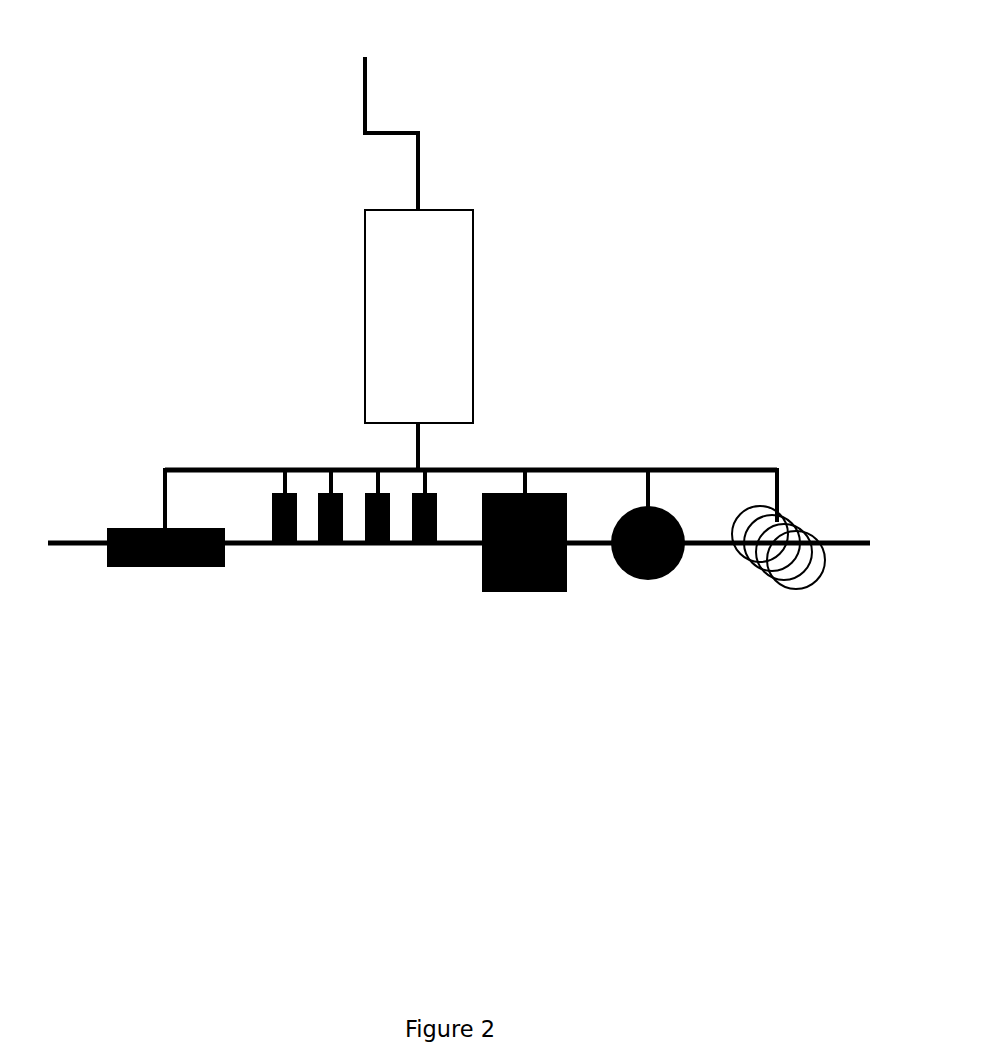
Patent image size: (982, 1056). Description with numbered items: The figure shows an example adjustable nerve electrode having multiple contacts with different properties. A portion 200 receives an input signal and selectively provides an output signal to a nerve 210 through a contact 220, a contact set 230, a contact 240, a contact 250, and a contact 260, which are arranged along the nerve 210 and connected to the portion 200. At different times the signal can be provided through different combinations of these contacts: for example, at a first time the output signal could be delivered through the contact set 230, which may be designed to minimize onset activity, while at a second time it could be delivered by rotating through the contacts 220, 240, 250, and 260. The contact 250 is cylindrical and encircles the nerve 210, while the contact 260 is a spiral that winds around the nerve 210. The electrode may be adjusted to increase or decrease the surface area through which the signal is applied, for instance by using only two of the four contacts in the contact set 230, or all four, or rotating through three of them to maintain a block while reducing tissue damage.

The portion 200 is at (485, 240).
The nerve 210 is at (849, 534).
The contact 220 is at (162, 571).
The contact set 230 is at (420, 571).
The contact 240 is at (529, 596).
The contact 250 is at (647, 584).
The contact 260 is at (764, 584).